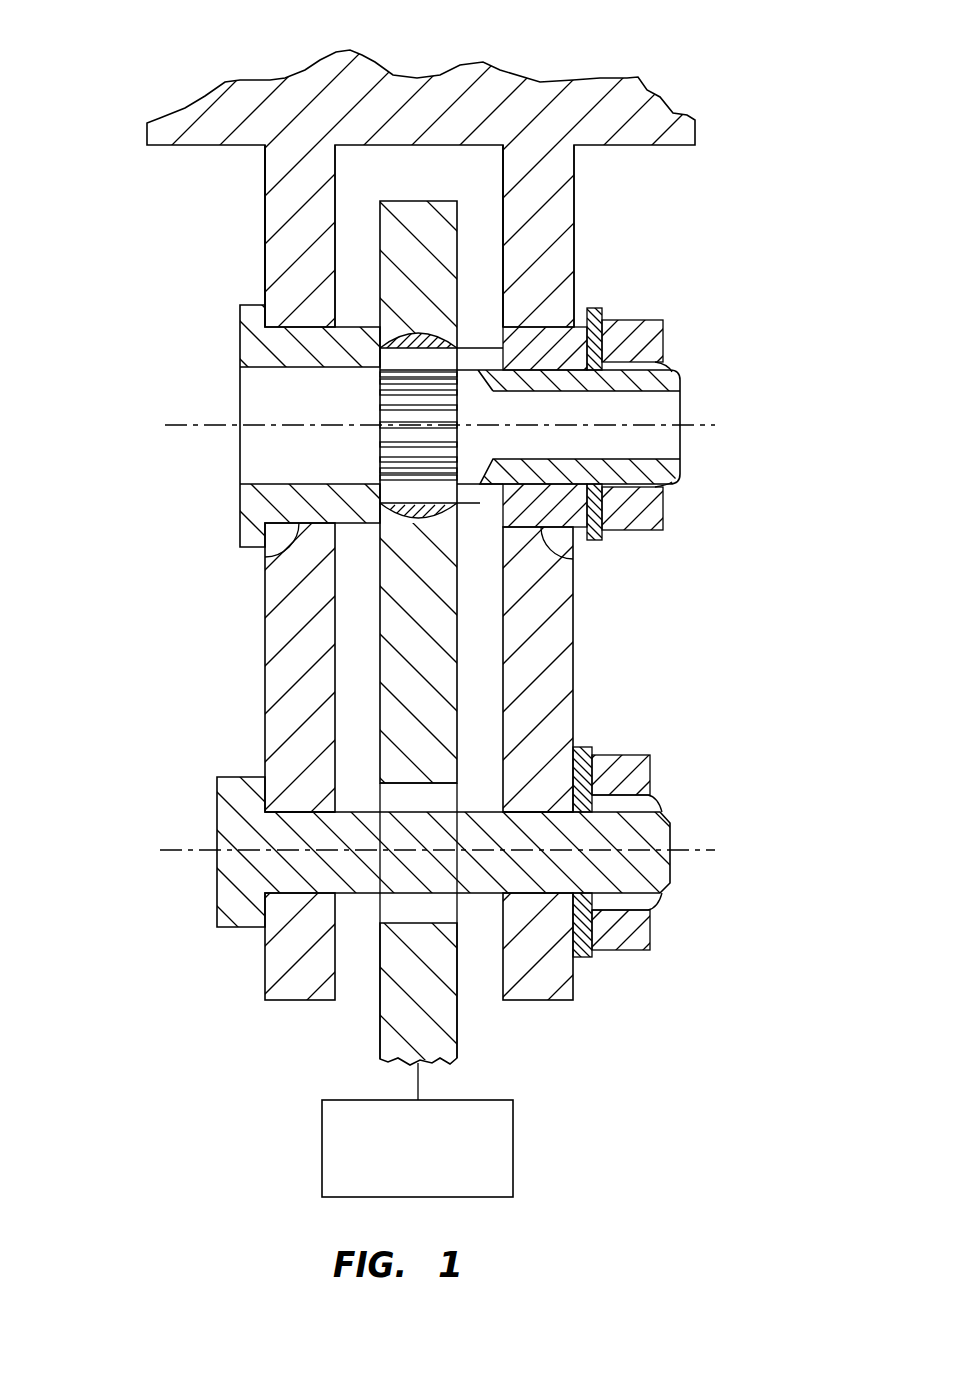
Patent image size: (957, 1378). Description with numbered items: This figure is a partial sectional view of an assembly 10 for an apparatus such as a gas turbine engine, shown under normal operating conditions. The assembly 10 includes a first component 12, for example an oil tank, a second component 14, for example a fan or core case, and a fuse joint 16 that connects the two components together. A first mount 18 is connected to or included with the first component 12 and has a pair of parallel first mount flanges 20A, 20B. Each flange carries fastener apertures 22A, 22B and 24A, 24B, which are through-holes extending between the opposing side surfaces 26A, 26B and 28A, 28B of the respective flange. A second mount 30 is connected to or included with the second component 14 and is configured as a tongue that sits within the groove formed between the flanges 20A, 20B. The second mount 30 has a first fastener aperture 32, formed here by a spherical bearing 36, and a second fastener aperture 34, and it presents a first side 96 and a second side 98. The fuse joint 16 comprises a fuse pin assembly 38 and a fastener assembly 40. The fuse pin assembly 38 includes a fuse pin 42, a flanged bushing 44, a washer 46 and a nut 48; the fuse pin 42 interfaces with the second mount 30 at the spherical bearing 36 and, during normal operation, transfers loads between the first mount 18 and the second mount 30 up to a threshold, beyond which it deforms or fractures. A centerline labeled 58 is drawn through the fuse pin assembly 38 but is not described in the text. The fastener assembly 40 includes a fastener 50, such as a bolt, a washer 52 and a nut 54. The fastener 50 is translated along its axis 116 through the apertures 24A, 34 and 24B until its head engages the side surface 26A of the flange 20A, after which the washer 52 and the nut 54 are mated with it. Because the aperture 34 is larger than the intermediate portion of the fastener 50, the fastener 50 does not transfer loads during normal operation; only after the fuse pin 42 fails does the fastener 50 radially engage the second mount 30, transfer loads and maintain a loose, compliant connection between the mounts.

The assembly 10 is at (130, 74).
The first component 12 is at (648, 96).
The second component 14 is at (322, 1140).
The fuse joint 16 is at (172, 703).
The first mount 18 is at (256, 200).
The first mount flange 20A is at (262, 957).
The first mount flange 20B is at (577, 988).
The fastener aperture 22A is at (283, 560).
The fastener aperture 22B is at (573, 552).
The fastener aperture 24A is at (293, 812).
The fastener aperture 24B is at (530, 812).
The side surface 26A is at (265, 158).
The side surface 26B is at (503, 180).
The side surface 28A is at (337, 167).
The side surface 28B is at (575, 173).
The second mount 30 is at (377, 1050).
The fastener aperture 32 is at (420, 333).
The fastener aperture 34 is at (423, 782).
The spherical bearing 36 is at (405, 335).
The fuse pin assembly 38 is at (693, 306).
The fastener assembly 40 is at (690, 773).
The fuse pin 42 is at (236, 333).
The flanged bushing 44 is at (586, 306).
The washer 46 is at (599, 318).
The nut 48 is at (667, 338).
The fastener 50 is at (214, 807).
The washer 52 is at (586, 962).
The nut 54 is at (654, 930).
The first axis 58 is at (193, 428).
The first side 96 is at (380, 1015).
The second side 98 is at (458, 1015).
The axis 116 is at (180, 862).